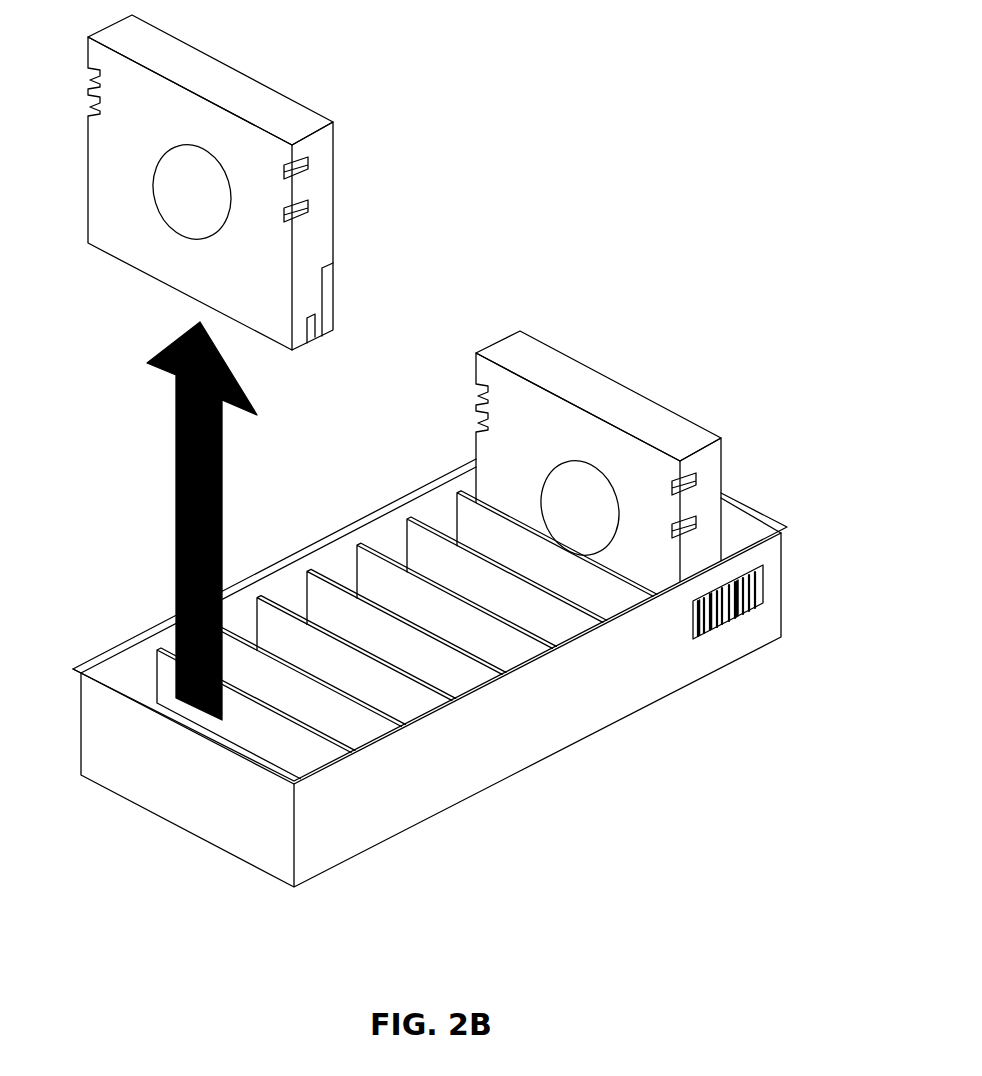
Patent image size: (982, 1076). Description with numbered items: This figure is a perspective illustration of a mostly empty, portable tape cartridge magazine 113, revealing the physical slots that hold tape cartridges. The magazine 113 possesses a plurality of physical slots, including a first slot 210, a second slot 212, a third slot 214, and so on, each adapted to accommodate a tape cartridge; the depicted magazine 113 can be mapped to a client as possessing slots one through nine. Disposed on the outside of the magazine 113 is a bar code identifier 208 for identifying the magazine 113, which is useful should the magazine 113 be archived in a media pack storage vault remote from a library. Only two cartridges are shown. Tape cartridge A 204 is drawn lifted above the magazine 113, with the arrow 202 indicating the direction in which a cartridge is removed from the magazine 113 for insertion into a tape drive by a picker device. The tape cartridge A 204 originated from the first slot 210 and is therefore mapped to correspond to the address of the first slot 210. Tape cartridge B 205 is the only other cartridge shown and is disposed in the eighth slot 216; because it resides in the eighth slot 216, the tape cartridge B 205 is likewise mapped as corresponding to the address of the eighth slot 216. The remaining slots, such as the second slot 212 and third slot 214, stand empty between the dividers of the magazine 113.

The tape cartridge magazine 113 is at (593, 738).
The arrow 202 is at (176, 490).
The tape cartridge A 204 is at (335, 243).
The tape cartridge B 205 is at (481, 352).
The bar code identifier 208 is at (720, 625).
The first slot 210 is at (134, 653).
The second slot 212 is at (350, 708).
The third slot 214 is at (272, 622).
The eighth slot 216 is at (485, 468).